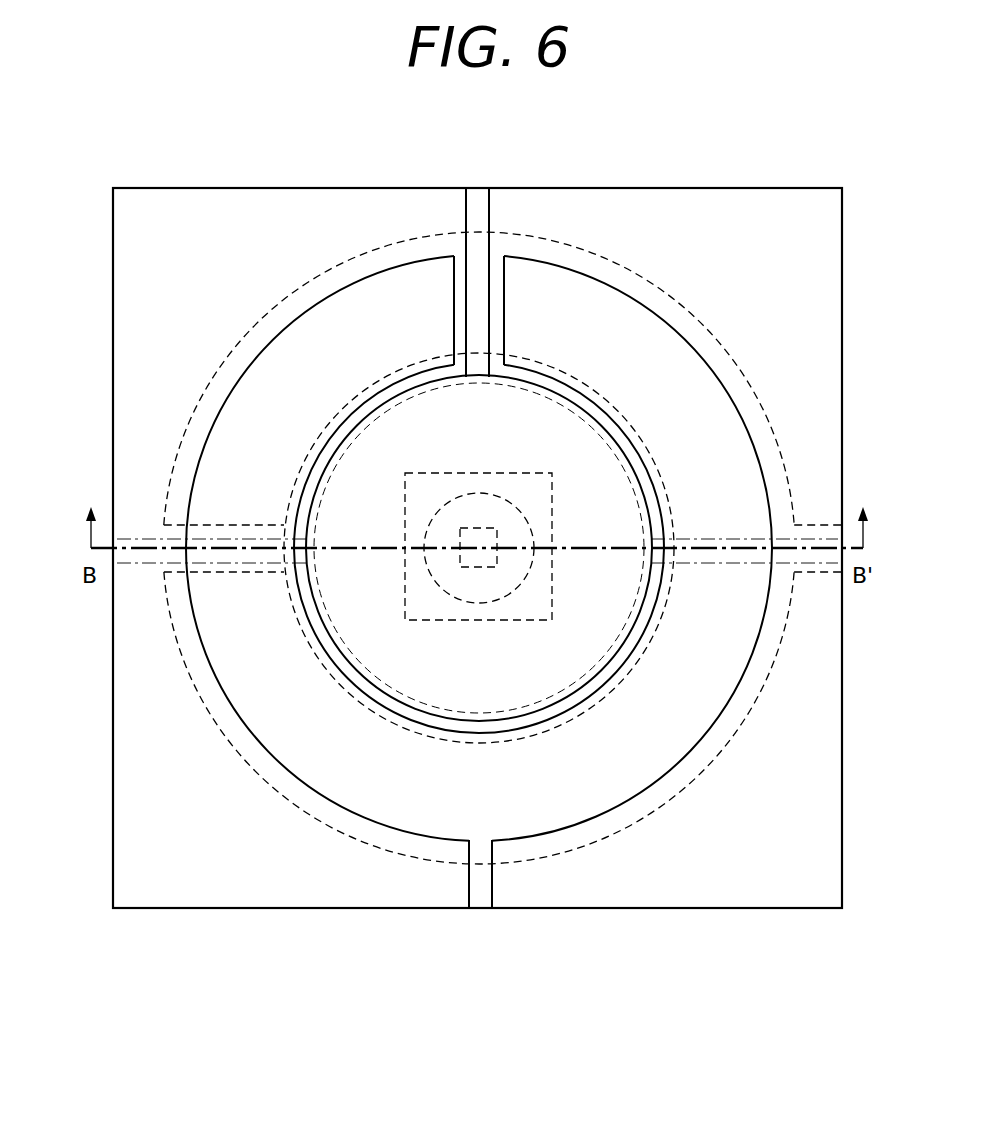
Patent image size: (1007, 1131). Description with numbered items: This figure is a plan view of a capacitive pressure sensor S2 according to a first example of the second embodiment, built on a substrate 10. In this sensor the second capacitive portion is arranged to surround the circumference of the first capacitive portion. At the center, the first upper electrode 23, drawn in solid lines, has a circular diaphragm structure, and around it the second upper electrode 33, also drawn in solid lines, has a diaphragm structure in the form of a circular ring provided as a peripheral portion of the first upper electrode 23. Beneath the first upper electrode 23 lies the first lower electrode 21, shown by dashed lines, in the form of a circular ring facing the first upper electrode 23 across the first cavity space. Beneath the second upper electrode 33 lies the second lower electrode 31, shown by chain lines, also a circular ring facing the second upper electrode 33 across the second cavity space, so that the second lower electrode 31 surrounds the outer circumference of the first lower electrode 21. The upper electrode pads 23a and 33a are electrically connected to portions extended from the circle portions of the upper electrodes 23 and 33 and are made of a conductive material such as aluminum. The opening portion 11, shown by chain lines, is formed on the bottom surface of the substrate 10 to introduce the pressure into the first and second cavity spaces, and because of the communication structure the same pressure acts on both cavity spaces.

The substrate 10 is at (688, 187).
The opening portion 11 is at (475, 540).
The first lower electrode 21 is at (553, 432).
The first upper electrode 23 is at (530, 384).
The upper electrode pad 23a is at (493, 200).
The second lower electrode 31 is at (776, 445).
The second upper electrode 33 is at (742, 406).
The upper electrode pad 33a is at (482, 882).
The capacitive pressure sensor S2 is at (348, 178).